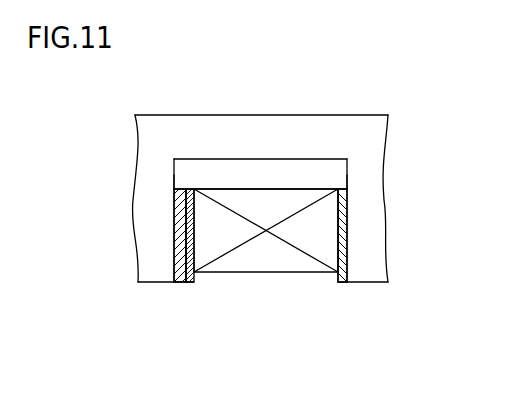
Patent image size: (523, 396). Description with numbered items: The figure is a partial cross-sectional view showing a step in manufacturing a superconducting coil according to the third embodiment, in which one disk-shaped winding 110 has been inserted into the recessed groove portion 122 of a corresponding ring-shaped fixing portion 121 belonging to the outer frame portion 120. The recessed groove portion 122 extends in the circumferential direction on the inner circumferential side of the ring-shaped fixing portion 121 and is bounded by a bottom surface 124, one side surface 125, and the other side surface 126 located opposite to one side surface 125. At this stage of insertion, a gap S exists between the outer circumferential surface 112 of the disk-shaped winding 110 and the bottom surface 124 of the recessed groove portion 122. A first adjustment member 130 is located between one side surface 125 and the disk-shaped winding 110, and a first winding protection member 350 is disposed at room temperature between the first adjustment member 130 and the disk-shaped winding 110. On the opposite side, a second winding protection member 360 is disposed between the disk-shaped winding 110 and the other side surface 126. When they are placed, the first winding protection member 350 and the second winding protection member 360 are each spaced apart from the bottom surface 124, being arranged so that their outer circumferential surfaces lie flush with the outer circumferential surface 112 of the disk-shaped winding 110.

The disk-shaped winding 110 is at (243, 262).
The outer circumferential surface 112 is at (217, 187).
The outer frame portion 120 is at (358, 115).
The ring-shaped fixing portion 121 is at (293, 143).
The recessed groove portion 122 is at (273, 284).
The bottom surface 124 is at (287, 161).
The one side surface 125 is at (176, 217).
The other side surface 126 is at (332, 200).
The first adjustment member 130 is at (188, 250).
The first winding protection member 350 is at (174, 247).
The second winding protection member 360 is at (340, 248).
The gap S is at (261, 184).